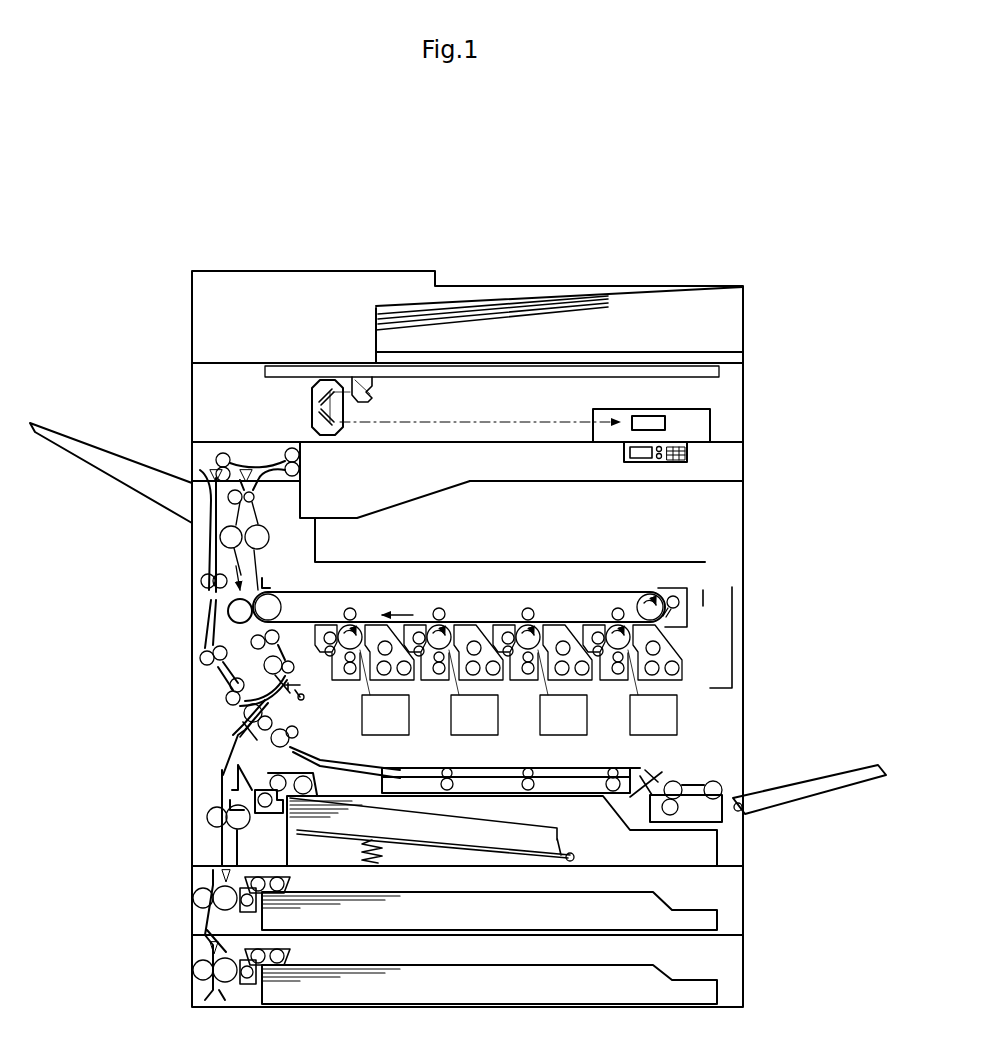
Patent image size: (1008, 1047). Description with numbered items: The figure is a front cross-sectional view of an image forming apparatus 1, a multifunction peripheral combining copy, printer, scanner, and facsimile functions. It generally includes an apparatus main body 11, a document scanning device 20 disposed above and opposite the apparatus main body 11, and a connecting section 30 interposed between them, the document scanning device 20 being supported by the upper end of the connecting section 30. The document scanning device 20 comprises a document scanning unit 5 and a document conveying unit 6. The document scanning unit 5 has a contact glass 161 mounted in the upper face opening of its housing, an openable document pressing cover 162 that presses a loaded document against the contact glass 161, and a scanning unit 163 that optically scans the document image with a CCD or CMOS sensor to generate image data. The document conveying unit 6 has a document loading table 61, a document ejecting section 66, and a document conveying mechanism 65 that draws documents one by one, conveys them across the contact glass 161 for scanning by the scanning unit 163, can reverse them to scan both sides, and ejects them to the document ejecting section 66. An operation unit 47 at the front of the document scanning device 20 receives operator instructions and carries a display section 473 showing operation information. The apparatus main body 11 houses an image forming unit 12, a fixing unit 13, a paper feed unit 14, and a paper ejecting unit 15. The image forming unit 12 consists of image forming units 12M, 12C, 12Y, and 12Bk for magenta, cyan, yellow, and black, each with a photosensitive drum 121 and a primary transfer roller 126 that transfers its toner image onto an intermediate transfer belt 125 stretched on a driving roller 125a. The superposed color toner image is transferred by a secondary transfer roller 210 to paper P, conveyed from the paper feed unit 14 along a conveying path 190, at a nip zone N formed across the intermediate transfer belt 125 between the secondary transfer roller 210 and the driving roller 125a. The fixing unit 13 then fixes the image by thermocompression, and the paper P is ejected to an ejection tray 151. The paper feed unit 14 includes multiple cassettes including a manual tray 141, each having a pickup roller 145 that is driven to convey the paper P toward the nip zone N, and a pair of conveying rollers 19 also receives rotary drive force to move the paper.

The image forming apparatus 1 is at (823, 342).
The document scanning unit 5 is at (405, 368).
The document conveying unit 6 is at (592, 268).
The apparatus main body 11 is at (752, 548).
The image forming unit 12 is at (540, 609).
The image forming unit for black 12Bk is at (361, 604).
The image forming unit for yellow 12Y is at (445, 604).
The image forming unit for cyan 12C is at (538, 604).
The image forming unit for magenta 12M is at (622, 604).
The fixing unit 13 is at (210, 541).
The paper feed unit 14 is at (728, 893).
The paper ejecting unit 15 is at (502, 502).
The pair of conveying rollers 19 is at (255, 640).
The document scanning device 20 is at (760, 387).
The connecting section 30 is at (186, 449).
The operation unit 47 is at (692, 464).
The document loading table 61 is at (650, 290).
The document conveying mechanism 65 is at (268, 341).
The document ejecting section 66 is at (655, 350).
The photosensitive drum 121 is at (632, 660).
The intermediate transfer belt 125 is at (651, 592).
The driving roller 125a is at (268, 596).
The primary transfer roller 126 is at (667, 601).
The manual tray 141 is at (838, 779).
The pickup roller 145 is at (235, 748).
The ejection tray 151 is at (338, 516).
The contact glass 161 is at (610, 372).
The document pressing cover 162 is at (544, 357).
The scanning unit 163 is at (296, 407).
The conveying path 190 is at (230, 615).
The secondary transfer roller 210 is at (258, 616).
The display section 473 is at (626, 452).
The nip zone N is at (237, 572).
The paper P is at (548, 817).